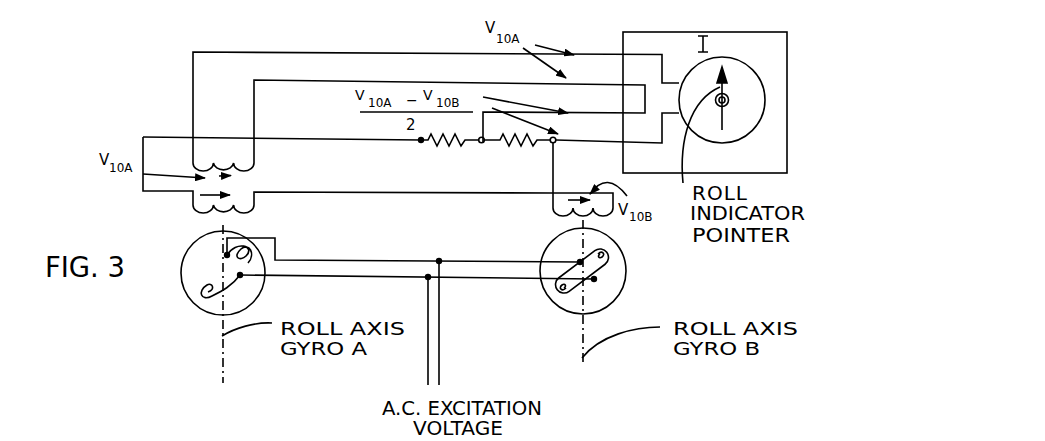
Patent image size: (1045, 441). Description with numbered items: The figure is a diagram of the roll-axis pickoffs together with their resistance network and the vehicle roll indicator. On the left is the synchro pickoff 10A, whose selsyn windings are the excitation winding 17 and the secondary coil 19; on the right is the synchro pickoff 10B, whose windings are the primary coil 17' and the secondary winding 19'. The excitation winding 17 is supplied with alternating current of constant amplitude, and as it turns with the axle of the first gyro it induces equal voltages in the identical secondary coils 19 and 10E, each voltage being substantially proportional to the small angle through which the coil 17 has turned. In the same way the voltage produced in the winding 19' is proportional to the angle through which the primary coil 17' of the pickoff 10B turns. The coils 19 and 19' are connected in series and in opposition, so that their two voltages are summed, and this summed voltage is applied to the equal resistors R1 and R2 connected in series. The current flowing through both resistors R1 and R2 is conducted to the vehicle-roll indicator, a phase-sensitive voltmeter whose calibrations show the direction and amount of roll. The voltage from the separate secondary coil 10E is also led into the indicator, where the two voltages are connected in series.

The secondary coil 10E is at (223, 156).
The synchro pickoff 10A is at (252, 177).
The synchro pickoff 10B is at (552, 222).
The secondary coil 19 is at (187, 197).
The secondary winding 19' is at (626, 218).
The excitation winding 17 is at (209, 304).
The primary coil 17' is at (601, 291).
The resistor R1 is at (454, 150).
The resistor R2 is at (520, 150).